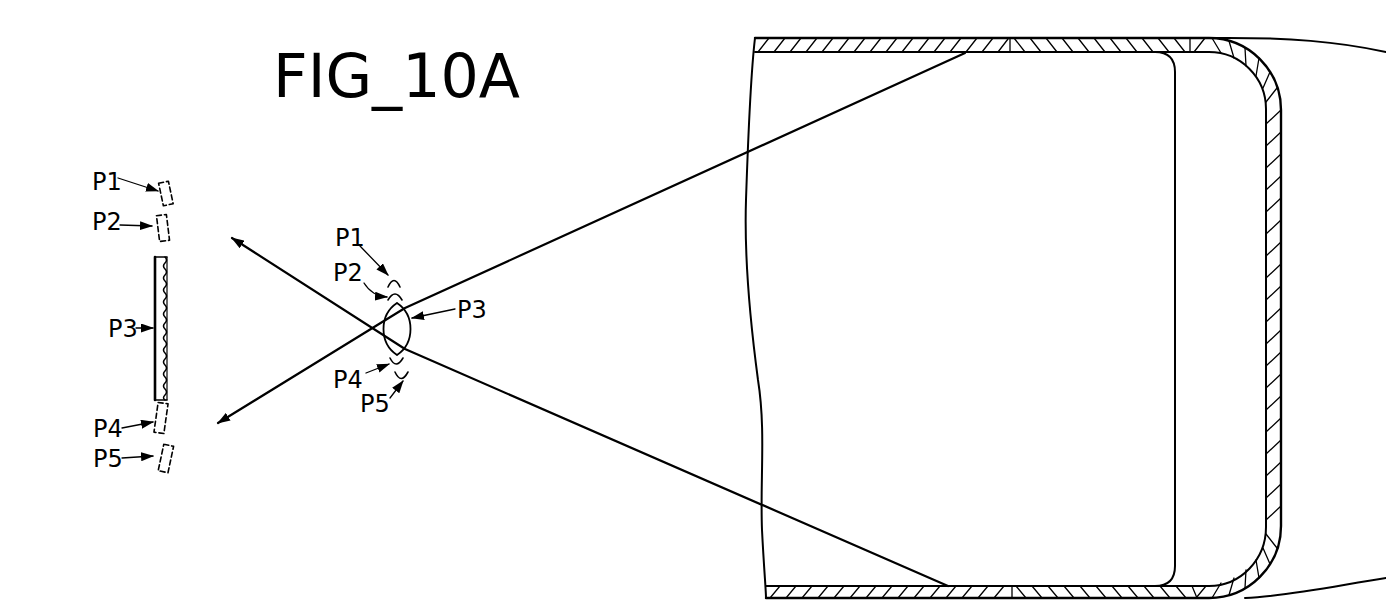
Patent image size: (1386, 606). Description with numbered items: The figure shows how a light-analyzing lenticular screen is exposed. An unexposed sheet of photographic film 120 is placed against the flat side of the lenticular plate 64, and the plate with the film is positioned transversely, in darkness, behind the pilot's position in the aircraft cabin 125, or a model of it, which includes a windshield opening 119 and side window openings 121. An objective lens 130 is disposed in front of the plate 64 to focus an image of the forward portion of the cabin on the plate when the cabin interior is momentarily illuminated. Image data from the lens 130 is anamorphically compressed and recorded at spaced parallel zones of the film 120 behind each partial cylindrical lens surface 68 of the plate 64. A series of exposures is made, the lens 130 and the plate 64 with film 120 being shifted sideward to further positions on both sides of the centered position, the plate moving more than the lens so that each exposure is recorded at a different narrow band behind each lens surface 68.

The lenticular plate 64 is at (171, 294).
The partial cylindrical lens surface 68 is at (168, 353).
The photographic film 120 is at (155, 368).
The objective lens 130 is at (410, 338).
The windshield opening 119 is at (1221, 583).
The side window openings 121 is at (1017, 587).
The aircraft cabin 125 is at (1150, 334).